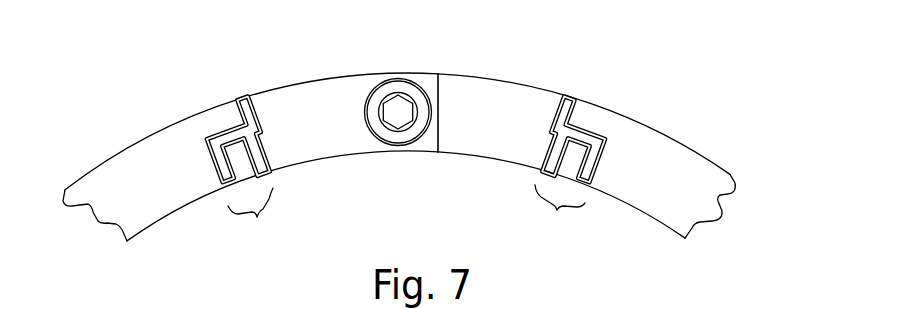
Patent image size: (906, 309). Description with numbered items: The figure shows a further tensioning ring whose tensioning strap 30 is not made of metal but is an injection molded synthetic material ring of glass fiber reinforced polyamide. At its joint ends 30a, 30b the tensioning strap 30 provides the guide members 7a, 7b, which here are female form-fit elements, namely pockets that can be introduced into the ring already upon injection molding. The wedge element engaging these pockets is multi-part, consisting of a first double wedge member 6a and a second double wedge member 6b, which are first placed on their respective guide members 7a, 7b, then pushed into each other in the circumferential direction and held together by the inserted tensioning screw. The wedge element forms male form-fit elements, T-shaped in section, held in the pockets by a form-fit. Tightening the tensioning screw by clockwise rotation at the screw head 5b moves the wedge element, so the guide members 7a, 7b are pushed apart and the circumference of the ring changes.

The tensioning strap 30 is at (764, 0).
The joint end 30a is at (249, 98).
The joint end 30b is at (564, 98).
The screw head 5b is at (379, 108).
The first double wedge member 6a is at (313, 132).
The second double wedge member 6b is at (488, 117).
The guide member 7a is at (253, 217).
The guide member 7b is at (560, 212).